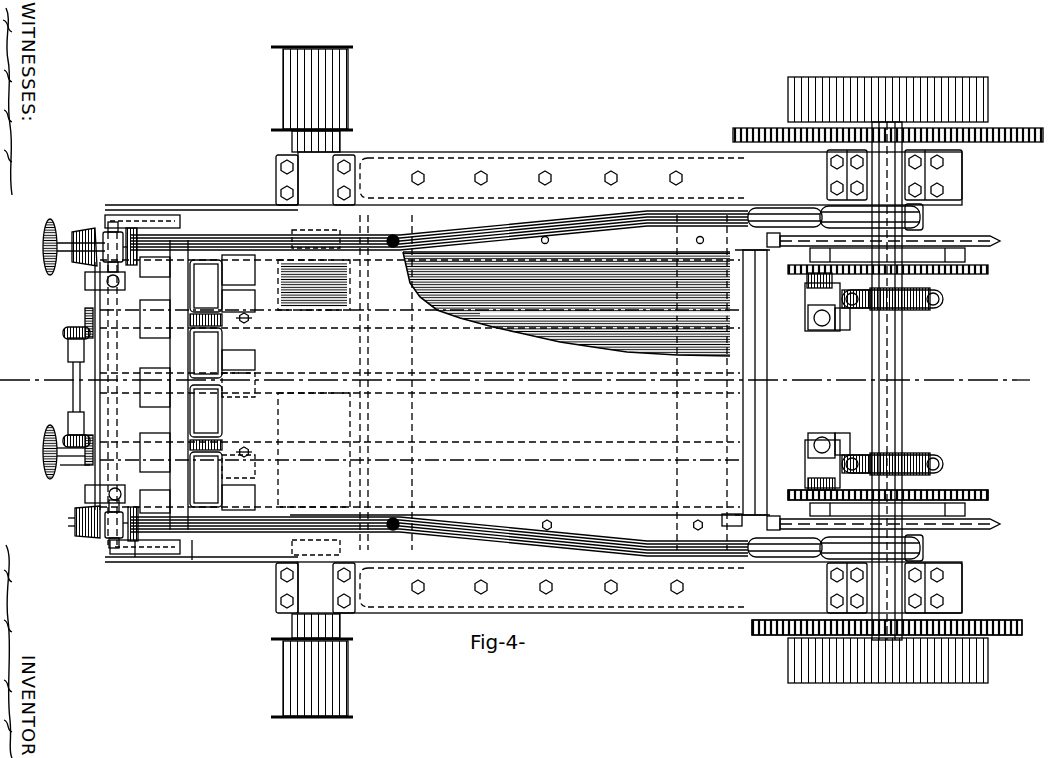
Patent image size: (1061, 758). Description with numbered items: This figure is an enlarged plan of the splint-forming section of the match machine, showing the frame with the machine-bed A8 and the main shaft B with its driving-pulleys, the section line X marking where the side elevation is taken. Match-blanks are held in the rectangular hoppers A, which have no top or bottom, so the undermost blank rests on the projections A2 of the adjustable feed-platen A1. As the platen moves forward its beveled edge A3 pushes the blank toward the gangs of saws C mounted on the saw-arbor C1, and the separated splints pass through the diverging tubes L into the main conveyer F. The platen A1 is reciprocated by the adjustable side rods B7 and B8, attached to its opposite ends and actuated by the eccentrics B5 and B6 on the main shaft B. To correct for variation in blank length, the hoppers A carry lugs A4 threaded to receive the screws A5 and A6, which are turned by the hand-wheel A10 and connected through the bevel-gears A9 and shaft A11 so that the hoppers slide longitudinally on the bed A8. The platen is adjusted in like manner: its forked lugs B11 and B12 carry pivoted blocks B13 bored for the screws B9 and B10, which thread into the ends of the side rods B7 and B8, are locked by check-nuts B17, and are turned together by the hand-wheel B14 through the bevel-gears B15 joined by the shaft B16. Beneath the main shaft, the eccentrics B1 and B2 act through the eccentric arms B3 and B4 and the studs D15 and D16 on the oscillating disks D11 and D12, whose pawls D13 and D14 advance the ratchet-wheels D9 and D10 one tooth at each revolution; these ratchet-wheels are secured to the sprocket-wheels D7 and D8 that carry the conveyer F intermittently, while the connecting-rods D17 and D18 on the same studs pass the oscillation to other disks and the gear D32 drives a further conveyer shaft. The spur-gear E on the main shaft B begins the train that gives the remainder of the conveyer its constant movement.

The adjustable hopper A is at (205, 268).
The adjustable feed-platen A1 is at (108, 240).
The platen projections A2 is at (204, 268).
The beveled edge A3 is at (182, 285).
The hopper lugs A4 is at (230, 316).
The hopper adjusting screw A5 is at (78, 460).
The hopper adjusting screw A6 is at (130, 318).
The machine-bed A8 is at (238, 563).
The bevel-gears A9 is at (64, 330).
The hand-wheel A10 is at (43, 450).
The shaft A11 is at (73, 378).
The main shaft B is at (903, 398).
The eccentric B1 is at (905, 458).
The eccentric B2 is at (920, 306).
The eccentric arm B3 is at (805, 465).
The eccentric arm B4 is at (805, 300).
The eccentric B5 is at (925, 547).
The eccentric B6 is at (925, 217).
The side rod B7 is at (206, 560).
The side rod B8 is at (268, 232).
The platen adjusting screw B9 is at (135, 562).
The platen adjusting screw B10 is at (132, 205).
The forked lug B11 is at (110, 556).
The forked lug B12 is at (110, 222).
The pivoted blocks B13 is at (110, 243).
The hand-wheel B14 is at (43, 247).
The bevel-gears B15 is at (80, 265).
The shaft B16 is at (90, 488).
The check-nuts B17 is at (134, 228).
The saws C is at (321, 300).
The saw-arbor C1 is at (290, 548).
The sprocket-wheel D7 is at (1003, 526).
The sprocket-wheel D8 is at (998, 238).
The ratchet-wheel D9 is at (968, 508).
The ratchet-wheel D10 is at (968, 256).
The pawl-carrying disk D11 is at (988, 494).
The pawl-carrying disk D12 is at (990, 270).
The pawl D13 is at (812, 496).
The pawl D14 is at (812, 280).
The stud D15 is at (812, 440).
The stud D16 is at (812, 331).
The connecting-rod D17 is at (842, 448).
The connecting-rod D18 is at (842, 331).
The gear D32 is at (1005, 632).
The spur-gear E is at (1005, 130).
The main conveyer F is at (759, 382).
The tubes L is at (572, 300).
The section line X is at (989, 375).